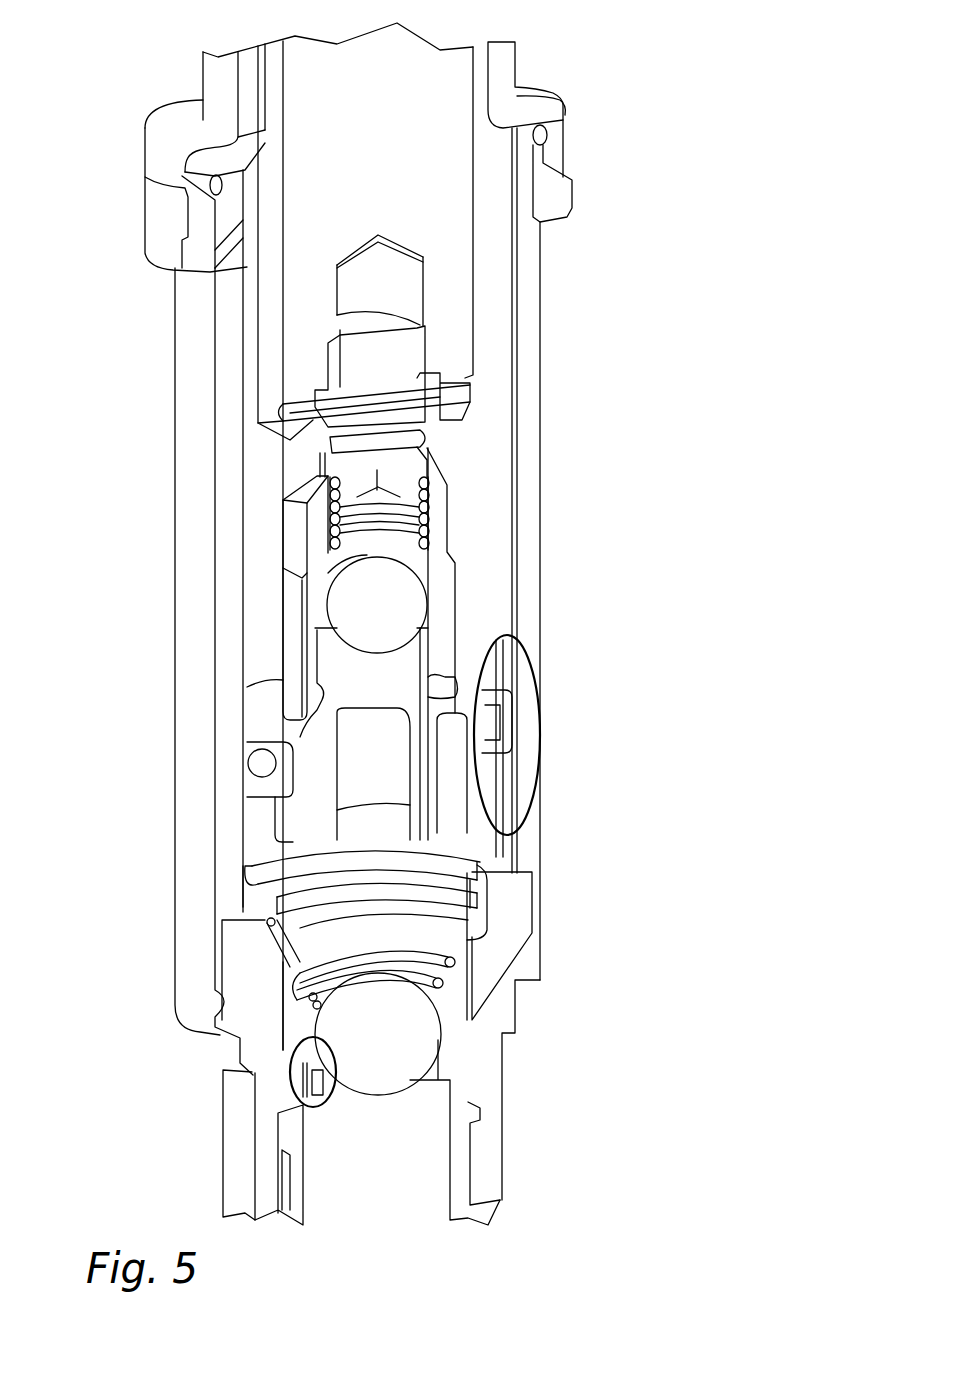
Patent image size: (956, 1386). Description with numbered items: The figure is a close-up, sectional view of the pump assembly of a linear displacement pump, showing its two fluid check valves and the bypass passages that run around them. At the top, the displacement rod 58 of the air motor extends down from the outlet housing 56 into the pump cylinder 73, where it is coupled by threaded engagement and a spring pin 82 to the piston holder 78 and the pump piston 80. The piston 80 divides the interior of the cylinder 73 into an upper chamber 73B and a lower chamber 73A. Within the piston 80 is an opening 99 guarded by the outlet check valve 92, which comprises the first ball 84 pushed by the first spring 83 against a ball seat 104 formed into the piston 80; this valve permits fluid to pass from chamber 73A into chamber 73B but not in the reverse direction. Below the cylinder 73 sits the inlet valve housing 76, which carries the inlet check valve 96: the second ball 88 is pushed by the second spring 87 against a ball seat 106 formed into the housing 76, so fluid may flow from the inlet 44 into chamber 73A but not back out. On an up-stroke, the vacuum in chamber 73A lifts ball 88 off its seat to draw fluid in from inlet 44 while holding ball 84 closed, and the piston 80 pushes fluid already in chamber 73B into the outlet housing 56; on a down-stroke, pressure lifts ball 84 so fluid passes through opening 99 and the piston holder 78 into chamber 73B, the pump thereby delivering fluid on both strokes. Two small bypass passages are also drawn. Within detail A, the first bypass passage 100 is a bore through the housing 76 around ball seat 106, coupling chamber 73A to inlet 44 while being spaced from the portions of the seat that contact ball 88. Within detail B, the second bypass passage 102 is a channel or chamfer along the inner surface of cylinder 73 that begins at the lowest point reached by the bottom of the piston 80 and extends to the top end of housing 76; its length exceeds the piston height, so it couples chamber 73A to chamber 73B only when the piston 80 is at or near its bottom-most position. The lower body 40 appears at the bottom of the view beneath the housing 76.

The lower housing / nozzle body 40 is at (430, 1203).
The inlet 44 is at (375, 1175).
The outlet housing 56 is at (543, 110).
The displacement rod 58 is at (399, 141).
The cylinder 73 is at (232, 672).
The chamber 73A is at (330, 840).
The chamber 73B is at (480, 423).
The inlet valve housing 76 is at (267, 1110).
The piston holder 78 is at (390, 362).
The pump piston 80 is at (288, 733).
The spring pin 82 is at (303, 397).
The first spring 83 is at (425, 497).
The first ball 84 is at (400, 597).
The second spring 87 is at (482, 858).
The second ball 88 is at (447, 1022).
The outlet check valve 92 is at (500, 603).
The inlet check valve 96 is at (265, 977).
The opening 99 is at (379, 777).
The first bypass passage 100 is at (297, 1077).
The second bypass passage 102 is at (505, 800).
The ball seat 104 is at (430, 628).
The ball seat 106 is at (460, 1028).
The detail A is at (287, 1060).
The detail B is at (545, 740).